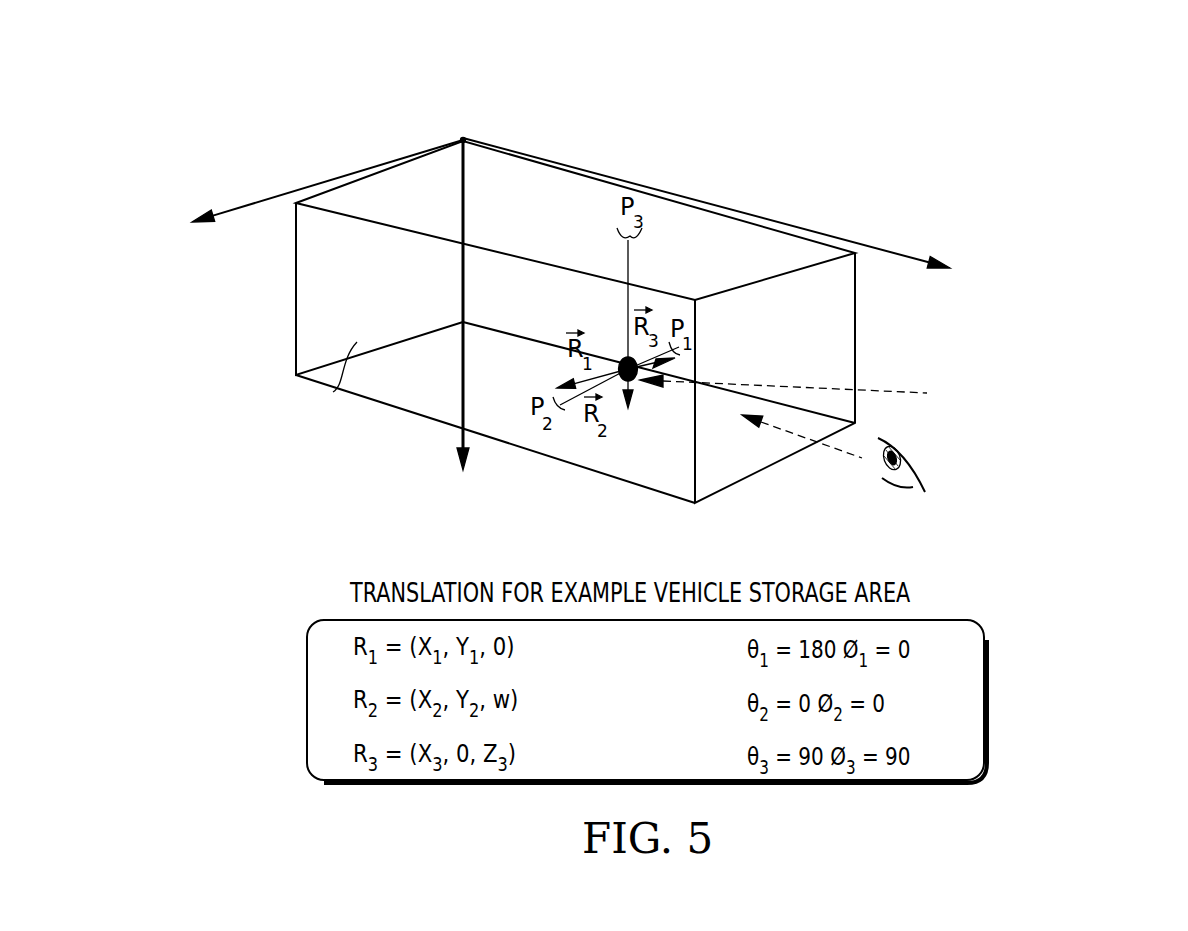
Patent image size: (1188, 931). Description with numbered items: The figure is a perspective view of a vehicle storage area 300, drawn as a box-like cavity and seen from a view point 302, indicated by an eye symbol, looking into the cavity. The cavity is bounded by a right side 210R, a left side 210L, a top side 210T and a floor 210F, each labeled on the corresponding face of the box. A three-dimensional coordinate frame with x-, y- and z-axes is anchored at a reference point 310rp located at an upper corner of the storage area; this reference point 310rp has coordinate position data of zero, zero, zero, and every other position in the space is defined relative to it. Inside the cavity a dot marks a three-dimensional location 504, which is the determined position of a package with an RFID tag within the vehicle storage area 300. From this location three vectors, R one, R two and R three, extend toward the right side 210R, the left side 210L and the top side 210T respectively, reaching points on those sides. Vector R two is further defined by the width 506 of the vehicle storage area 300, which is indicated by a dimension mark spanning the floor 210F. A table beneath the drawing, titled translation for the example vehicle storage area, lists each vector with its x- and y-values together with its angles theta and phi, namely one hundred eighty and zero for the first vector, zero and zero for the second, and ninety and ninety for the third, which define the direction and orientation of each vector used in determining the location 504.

The vehicle storage area 300 is at (311, 160).
The reference point 310rp is at (463, 130).
The top side 210T is at (597, 195).
The right side 210R is at (842, 362).
The left side 210L is at (303, 292).
The floor 210F is at (618, 470).
The width 506 is at (372, 340).
The 3D location 504 is at (1040, 380).
The view point 302 is at (823, 443).